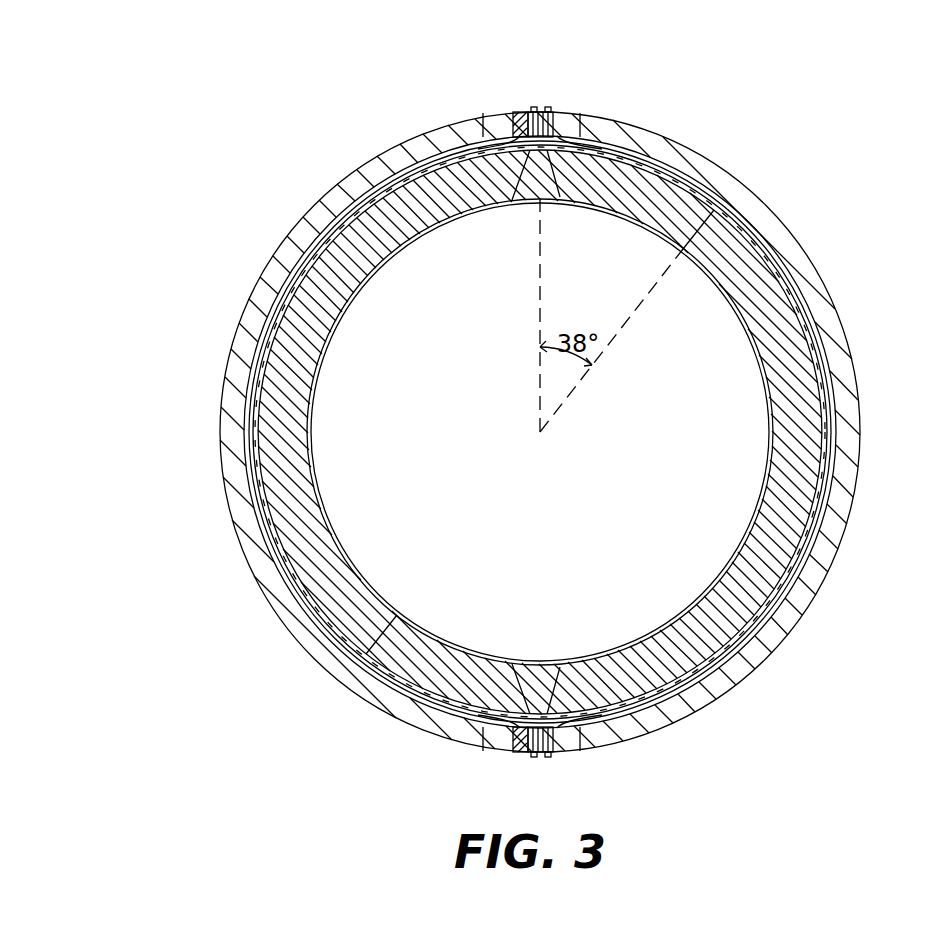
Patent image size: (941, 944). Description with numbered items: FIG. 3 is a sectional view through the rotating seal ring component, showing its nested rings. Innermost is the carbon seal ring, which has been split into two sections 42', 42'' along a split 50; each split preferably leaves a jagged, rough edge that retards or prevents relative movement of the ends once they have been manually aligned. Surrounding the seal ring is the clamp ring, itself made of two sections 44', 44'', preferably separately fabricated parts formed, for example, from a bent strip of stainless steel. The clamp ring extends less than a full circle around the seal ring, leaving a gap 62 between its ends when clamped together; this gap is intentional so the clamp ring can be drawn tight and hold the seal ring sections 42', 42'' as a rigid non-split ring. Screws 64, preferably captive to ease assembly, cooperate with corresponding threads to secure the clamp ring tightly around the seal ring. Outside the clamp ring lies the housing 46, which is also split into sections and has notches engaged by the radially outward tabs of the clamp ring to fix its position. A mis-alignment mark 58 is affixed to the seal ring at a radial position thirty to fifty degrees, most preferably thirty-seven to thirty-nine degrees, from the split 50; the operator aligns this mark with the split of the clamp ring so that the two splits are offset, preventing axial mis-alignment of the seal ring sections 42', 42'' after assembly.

The seal ring section 42' is at (727, 432).
The seal ring section 42'' is at (344, 432).
The clamp ring section 44' is at (720, 432).
The clamp ring section 44'' is at (365, 432).
The housing 46 is at (708, 172).
The split 50 is at (707, 222).
The mis-alignment mark 58 is at (538, 196).
The gap 62 is at (557, 140).
The screws 64 is at (518, 112).